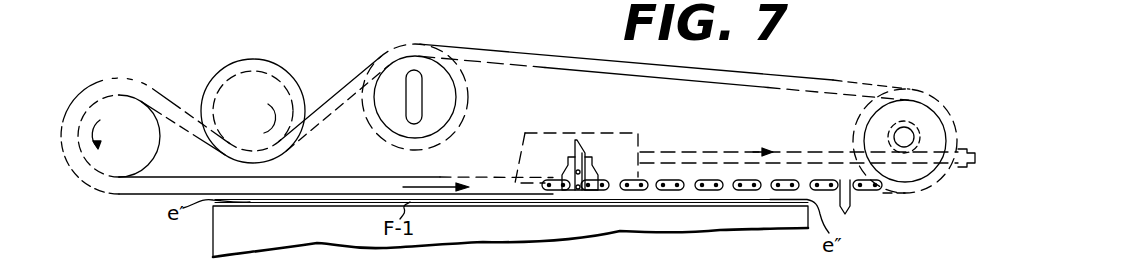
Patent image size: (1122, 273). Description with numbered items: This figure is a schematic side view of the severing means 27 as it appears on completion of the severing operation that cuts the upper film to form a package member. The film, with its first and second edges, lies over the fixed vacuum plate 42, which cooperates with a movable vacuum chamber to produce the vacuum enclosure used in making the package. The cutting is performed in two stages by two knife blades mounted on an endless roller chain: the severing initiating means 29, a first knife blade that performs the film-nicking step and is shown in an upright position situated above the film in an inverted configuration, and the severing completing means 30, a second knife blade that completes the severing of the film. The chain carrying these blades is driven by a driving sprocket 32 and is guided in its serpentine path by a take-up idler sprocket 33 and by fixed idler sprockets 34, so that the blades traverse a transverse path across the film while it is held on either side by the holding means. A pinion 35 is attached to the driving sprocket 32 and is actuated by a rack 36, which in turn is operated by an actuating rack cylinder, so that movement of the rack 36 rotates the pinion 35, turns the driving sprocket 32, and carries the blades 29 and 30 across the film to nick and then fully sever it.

The severing means 27 is at (799, 57).
The severing initiating means 29 is at (582, 148).
The severing completing means 30 is at (852, 208).
The driving sprocket 32 is at (907, 108).
The take-up idler sprocket 33 is at (434, 93).
The fixed idler sprockets 34 is at (131, 141).
The pinion 35 is at (900, 137).
The rack 36 is at (962, 168).
The fixed vacuum plate 42 is at (501, 233).